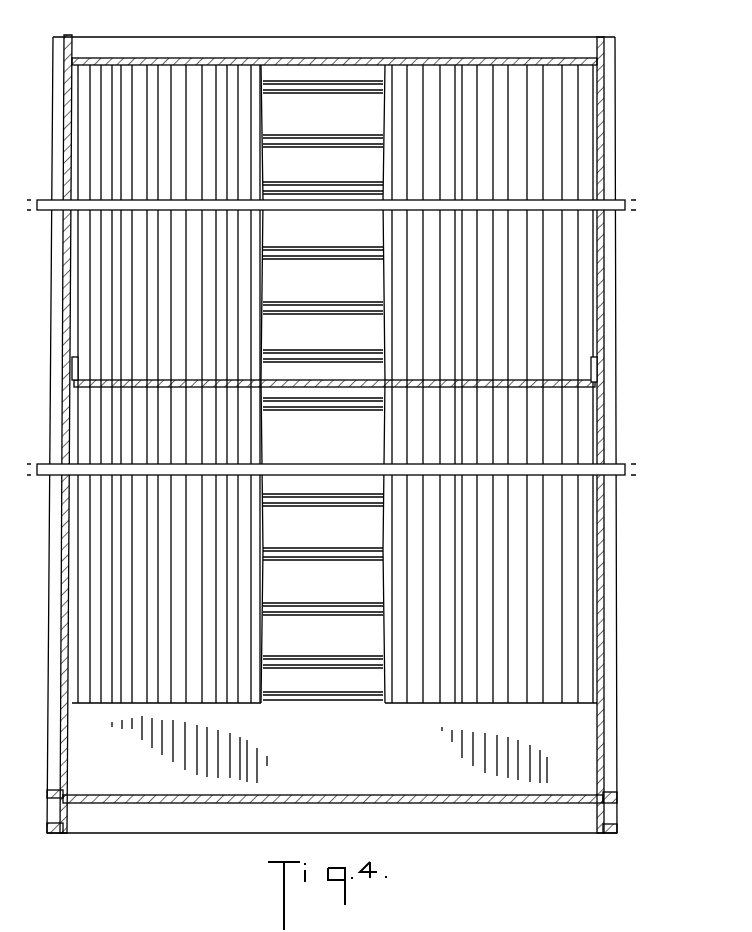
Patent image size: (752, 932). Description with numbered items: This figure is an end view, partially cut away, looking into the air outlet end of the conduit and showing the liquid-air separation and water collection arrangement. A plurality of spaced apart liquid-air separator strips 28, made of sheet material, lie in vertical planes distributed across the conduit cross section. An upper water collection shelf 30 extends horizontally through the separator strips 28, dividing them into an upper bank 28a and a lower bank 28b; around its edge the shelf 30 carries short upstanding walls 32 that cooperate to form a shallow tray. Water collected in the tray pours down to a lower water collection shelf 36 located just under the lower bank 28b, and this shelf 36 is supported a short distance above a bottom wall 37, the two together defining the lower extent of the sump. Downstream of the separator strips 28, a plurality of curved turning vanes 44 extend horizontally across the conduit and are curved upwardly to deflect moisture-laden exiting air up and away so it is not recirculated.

The liquid-air separator strips 28 is at (160, 75).
The upper bank of liquid-air separator strips 28a is at (580, 278).
The lower bank of liquid-air separator strips 28b is at (570, 597).
The upper water collection shelf 30 is at (575, 380).
The short upstanding walls 32 is at (72, 372).
The lower water collection shelf 36 is at (95, 700).
The bottom wall 37 is at (437, 800).
The curved turning vanes 44 is at (307, 160).